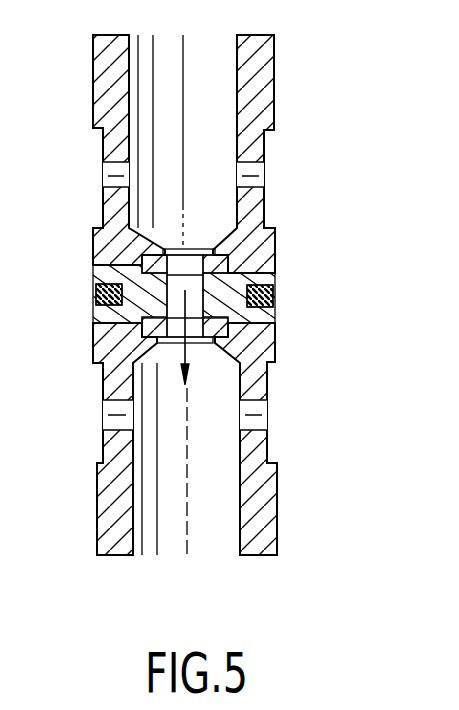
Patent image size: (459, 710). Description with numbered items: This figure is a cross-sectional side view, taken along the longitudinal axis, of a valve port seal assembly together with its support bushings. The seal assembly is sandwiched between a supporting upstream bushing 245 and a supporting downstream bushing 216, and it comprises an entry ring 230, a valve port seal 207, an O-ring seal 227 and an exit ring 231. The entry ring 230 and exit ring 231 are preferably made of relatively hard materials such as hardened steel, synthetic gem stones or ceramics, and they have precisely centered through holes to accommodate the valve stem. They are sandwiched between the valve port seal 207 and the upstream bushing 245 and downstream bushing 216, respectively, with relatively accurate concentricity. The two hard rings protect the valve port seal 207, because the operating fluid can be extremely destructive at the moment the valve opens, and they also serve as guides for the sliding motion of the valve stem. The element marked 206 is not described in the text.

The upstream bushing 245 is at (257, 108).
The downstream bushing 216 is at (260, 532).
The valve port seal 207 is at (262, 272).
The O-ring seal 227 is at (262, 292).
The entry ring 230 is at (228, 272).
The exit ring 231 is at (225, 330).
The valve spool 206 is at (178, 298).